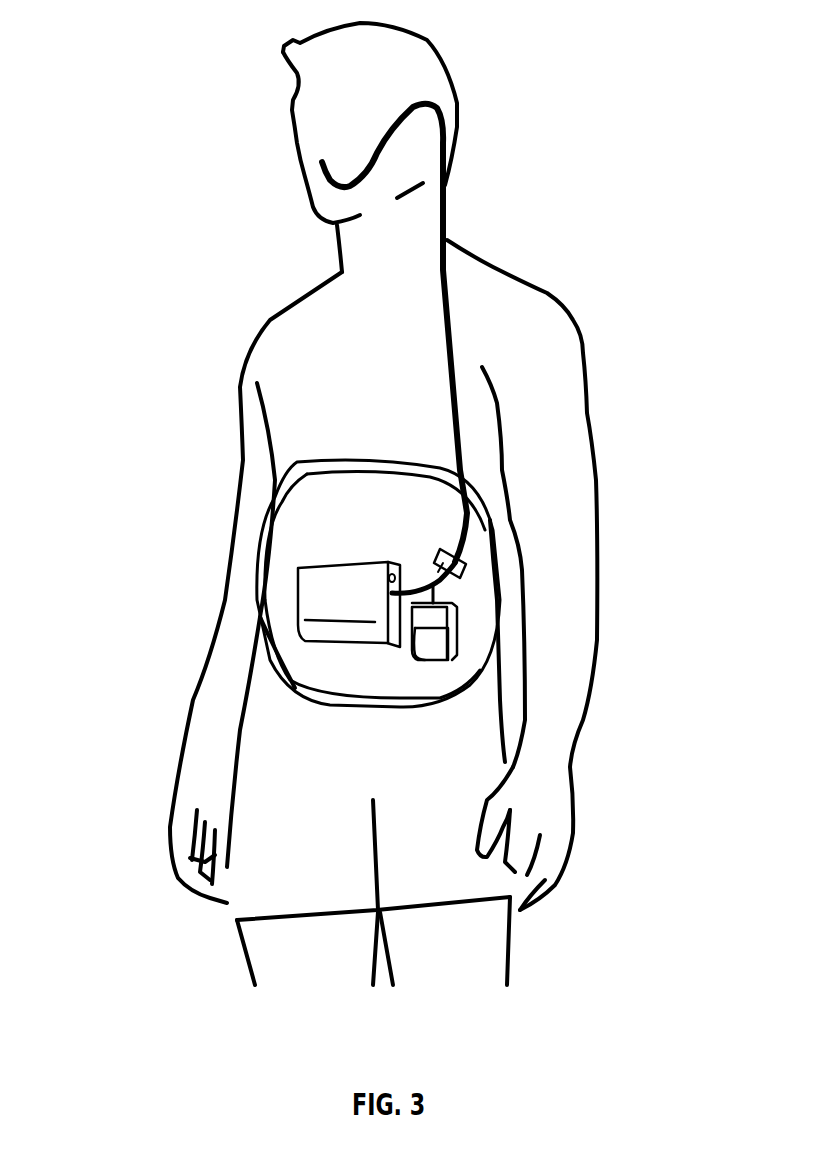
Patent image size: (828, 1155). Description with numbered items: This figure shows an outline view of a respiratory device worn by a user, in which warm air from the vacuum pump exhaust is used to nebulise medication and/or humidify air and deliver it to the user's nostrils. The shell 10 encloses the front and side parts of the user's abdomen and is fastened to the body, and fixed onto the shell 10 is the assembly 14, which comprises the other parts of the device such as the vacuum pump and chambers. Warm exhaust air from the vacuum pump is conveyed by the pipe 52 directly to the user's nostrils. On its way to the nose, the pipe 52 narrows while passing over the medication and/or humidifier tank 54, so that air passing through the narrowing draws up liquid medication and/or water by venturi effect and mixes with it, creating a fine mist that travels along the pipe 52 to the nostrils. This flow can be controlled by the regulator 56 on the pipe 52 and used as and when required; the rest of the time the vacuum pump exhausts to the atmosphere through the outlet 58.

The shell 10 is at (297, 542).
The assembly 14 is at (340, 588).
The pipe 52 is at (443, 383).
The medication and/or humidifier tank 54 is at (437, 648).
The regulator 56 is at (473, 567).
The outlet 58 is at (383, 560).